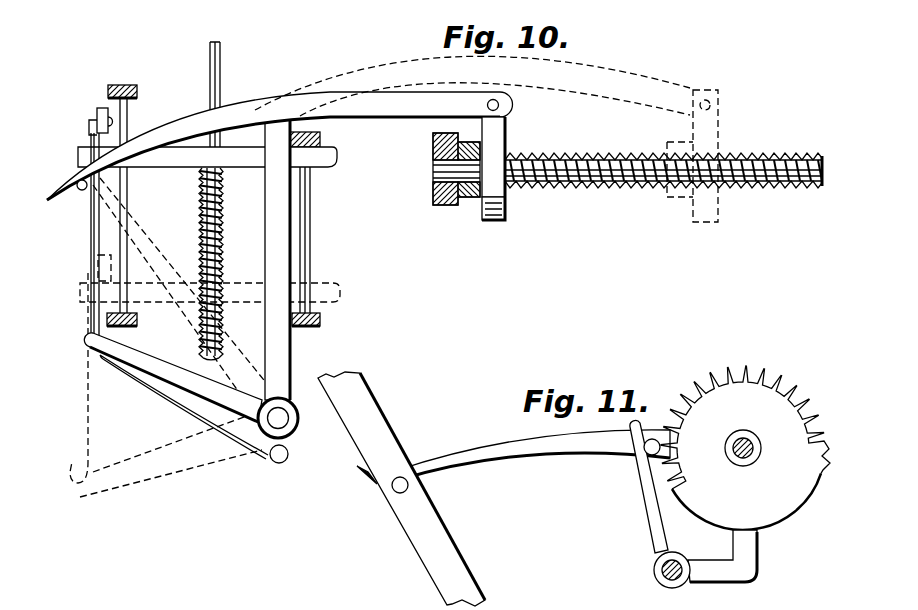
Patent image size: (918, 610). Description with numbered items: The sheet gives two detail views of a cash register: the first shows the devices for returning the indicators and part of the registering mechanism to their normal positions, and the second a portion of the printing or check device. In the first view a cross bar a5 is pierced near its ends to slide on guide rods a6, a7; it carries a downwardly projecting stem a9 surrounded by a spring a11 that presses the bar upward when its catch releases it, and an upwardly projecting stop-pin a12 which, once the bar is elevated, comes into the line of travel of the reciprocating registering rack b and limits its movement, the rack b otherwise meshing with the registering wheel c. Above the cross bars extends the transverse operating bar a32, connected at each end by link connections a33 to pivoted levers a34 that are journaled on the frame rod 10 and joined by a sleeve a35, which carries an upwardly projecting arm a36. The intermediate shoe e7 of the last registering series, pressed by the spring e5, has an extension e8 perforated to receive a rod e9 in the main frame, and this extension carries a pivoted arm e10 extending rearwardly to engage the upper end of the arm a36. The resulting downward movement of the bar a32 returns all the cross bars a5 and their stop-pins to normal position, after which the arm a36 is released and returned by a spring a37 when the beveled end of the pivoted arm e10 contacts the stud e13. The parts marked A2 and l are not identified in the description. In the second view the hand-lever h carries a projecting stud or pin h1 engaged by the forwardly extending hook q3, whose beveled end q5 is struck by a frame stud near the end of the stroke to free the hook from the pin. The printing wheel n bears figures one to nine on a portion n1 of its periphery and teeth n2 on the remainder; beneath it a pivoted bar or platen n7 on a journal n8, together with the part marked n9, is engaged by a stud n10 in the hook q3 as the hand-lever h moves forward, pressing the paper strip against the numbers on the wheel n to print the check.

In FIG. 10, the cross bar a5 is at (207, 157).
In FIG. 10, the guide rod a6 is at (310, 250).
In FIG. 10, the guide rod a7 is at (125, 240).
In FIG. 10, the downwardly projecting rod or stem a9 is at (222, 326).
In FIG. 10, the spring a11 is at (222, 252).
In FIG. 10, the upwardly projecting stud or pin a12 is at (222, 68).
In FIG. 10, the operating bar a32 is at (97, 114).
In FIG. 10, the link connections a33 is at (92, 258).
In FIG. 10, the pivoted levers a34 is at (115, 342).
In FIG. 10, the sleeve a35 is at (290, 400).
In FIG. 10, the upwardly projecting arm a36 is at (275, 209).
In FIG. 10, the spring a37 is at (167, 387).
In FIG. 10, the reciprocating registering rack b is at (106, 268).
In FIG. 10, the registering wheel c is at (280, 118).
In FIG. 10, the spring e5 is at (657, 182).
In FIG. 10, the intermediate shoe e7 is at (506, 213).
In FIG. 10, the extension e8 is at (493, 157).
In FIG. 10, the rod e9 is at (620, 182).
In FIG. 10, the pivoted arm or lever e10 is at (280, 146).
In FIG. 10, the stud or pin e13 is at (79, 191).
In FIG. 10, the nut A2 is at (433, 145).
In FIG. 10, the nut flange l is at (470, 200).
In FIG. 10, the frame rod 10 is at (292, 413).
In FIG. 11, the hand-lever h is at (401, 489).
In FIG. 11, the projecting stud or pin h1 is at (410, 485).
In FIG. 11, the forwardly extending hook q3 is at (532, 455).
In FIG. 11, the beveled end of hook q5 is at (370, 480).
In FIG. 11, the printing wheel n is at (745, 448).
In FIG. 11, the portion of periphery with figures n1 is at (781, 521).
In FIG. 11, the teeth n2 is at (705, 362).
In FIG. 11, the pivoted bar or platen n7 is at (740, 567).
In FIG. 11, the journal n8 is at (660, 571).
In FIG. 11, the lever n9 is at (647, 493).
In FIG. 11, the stud n10 is at (653, 438).